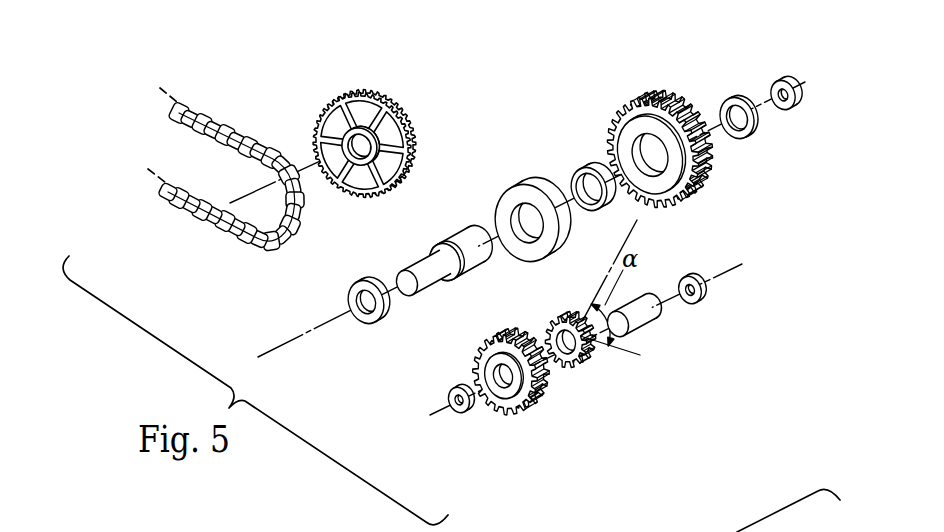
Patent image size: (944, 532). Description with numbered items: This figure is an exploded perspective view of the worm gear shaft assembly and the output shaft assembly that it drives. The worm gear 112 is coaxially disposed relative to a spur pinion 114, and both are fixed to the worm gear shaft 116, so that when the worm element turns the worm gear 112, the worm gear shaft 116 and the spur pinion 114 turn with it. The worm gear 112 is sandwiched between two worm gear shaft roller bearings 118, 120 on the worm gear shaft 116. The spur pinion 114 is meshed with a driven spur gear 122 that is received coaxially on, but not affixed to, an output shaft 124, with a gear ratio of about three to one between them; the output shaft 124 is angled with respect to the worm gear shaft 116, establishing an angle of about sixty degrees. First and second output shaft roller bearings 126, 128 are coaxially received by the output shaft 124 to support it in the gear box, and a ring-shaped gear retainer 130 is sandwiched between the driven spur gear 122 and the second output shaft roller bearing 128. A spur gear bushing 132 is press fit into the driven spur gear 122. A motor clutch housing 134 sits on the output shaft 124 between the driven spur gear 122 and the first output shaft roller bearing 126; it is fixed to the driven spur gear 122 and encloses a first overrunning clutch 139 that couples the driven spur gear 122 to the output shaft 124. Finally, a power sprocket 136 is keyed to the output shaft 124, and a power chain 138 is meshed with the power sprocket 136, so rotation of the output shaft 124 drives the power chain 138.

The worm gear 112 is at (531, 408).
The spur pinion 114 is at (581, 366).
The worm gear shaft 116 is at (649, 325).
The worm gear shaft roller bearing 118 is at (458, 414).
The worm gear shaft roller bearing 120 is at (703, 300).
The driven spur gear 122 is at (649, 93).
The output shaft 124 is at (455, 243).
The first output shaft roller bearing 126 is at (364, 325).
The second output shaft roller bearing 128 is at (778, 82).
The gear retainer 130 is at (731, 98).
The spur gear bushing 132 is at (590, 165).
The motor clutch housing 134 is at (522, 179).
The power sprocket 136 is at (403, 141).
The power chain 138 is at (234, 122).
The first overrunning clutch 139 is at (739, 165).